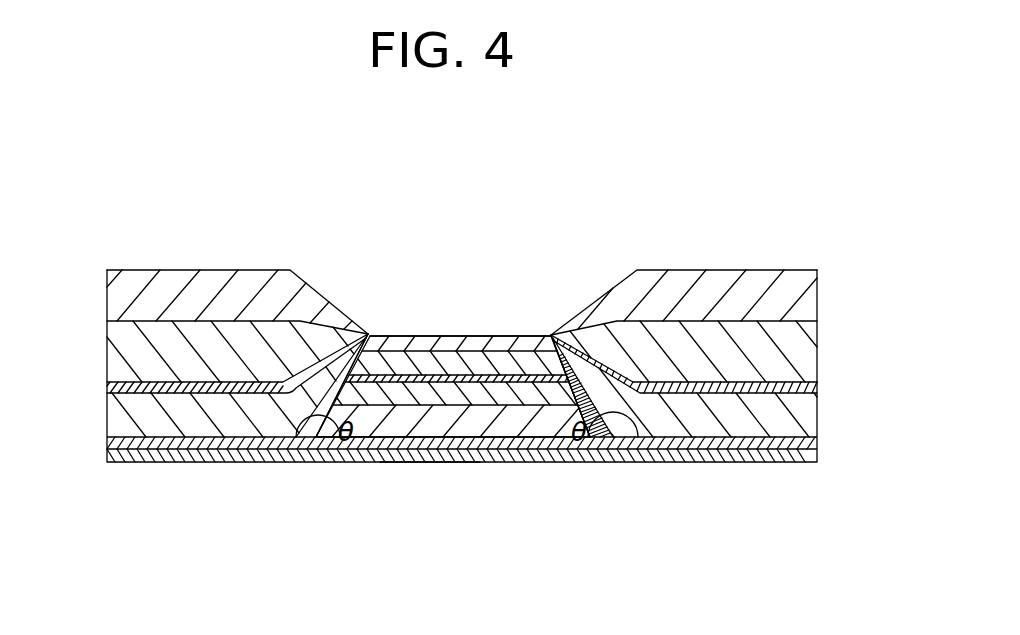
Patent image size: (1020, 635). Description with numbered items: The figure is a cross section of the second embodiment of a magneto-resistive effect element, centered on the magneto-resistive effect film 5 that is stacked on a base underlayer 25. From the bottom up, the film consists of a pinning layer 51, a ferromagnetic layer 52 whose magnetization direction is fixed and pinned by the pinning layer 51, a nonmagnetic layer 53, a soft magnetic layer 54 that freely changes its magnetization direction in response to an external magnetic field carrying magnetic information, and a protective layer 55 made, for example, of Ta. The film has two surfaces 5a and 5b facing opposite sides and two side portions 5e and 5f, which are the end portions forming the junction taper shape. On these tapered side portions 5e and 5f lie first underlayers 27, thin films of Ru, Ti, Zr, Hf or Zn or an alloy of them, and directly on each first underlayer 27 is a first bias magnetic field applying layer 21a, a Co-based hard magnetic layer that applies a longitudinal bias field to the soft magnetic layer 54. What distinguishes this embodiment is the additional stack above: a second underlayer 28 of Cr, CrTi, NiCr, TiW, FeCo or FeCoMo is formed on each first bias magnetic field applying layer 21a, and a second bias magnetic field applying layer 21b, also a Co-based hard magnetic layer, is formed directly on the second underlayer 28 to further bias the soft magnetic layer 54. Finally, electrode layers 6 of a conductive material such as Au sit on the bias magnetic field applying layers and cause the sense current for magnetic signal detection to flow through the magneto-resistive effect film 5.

The magneto-resistive effect film 5 is at (497, 327).
The surface of the magneto-resistive effect film 5a is at (404, 343).
The surface of the magneto-resistive effect film 5b is at (427, 463).
The side portion 5e is at (320, 360).
The side portion 5f is at (587, 395).
The electrode layer 6 is at (143, 283).
The first bias magnetic field applying layer 21a is at (127, 417).
The second bias magnetic field applying layer 21b is at (123, 343).
The base underlayer 25 is at (763, 457).
The first underlayer 27 is at (299, 440).
The second underlayer 28 is at (157, 382).
The pinning layer 51 is at (374, 440).
The ferromagnetic layer 52 is at (412, 392).
The nonmagnetic layer 53 is at (457, 380).
The soft magnetic layer 54 is at (497, 365).
The protective layer 55 is at (458, 342).